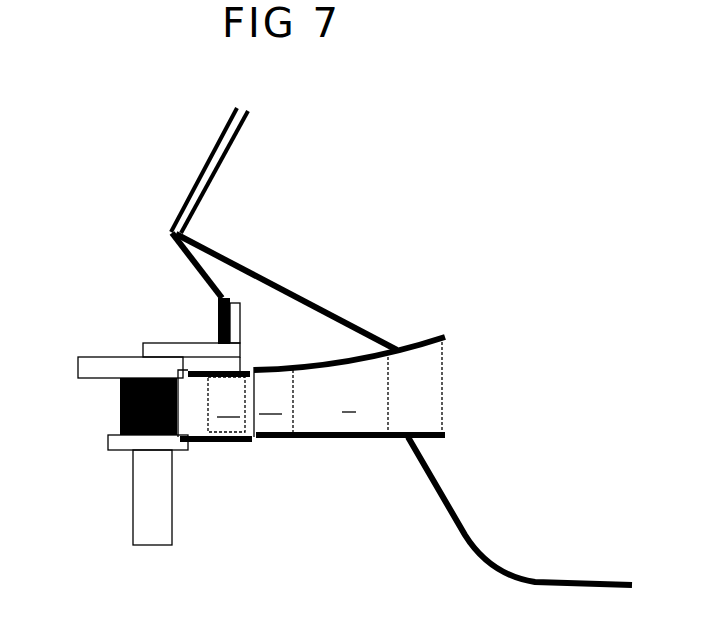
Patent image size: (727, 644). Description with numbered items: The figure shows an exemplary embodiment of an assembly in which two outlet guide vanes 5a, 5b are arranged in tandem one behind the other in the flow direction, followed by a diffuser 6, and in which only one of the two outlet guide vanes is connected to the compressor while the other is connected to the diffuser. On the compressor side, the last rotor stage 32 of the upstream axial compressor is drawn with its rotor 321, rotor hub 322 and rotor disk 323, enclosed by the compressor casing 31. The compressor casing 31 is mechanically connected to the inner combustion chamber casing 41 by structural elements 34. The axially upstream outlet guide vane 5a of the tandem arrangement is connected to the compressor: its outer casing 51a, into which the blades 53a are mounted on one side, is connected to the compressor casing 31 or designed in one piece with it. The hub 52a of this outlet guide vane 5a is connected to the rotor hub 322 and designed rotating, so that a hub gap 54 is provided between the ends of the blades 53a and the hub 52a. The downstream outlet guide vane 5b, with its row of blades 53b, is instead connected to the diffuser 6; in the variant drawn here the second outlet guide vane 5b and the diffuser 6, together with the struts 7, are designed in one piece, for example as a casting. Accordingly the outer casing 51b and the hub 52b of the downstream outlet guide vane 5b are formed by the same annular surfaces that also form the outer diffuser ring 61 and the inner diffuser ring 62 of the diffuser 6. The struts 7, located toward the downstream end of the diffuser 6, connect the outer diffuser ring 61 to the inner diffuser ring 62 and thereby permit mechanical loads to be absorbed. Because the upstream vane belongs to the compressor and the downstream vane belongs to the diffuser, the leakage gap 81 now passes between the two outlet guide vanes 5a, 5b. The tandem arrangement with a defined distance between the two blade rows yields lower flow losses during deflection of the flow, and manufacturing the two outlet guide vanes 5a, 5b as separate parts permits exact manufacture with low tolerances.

The structural elements 34 is at (195, 175).
The inner combustion chamber casing 41 is at (262, 270).
The compressor casing 31 is at (143, 357).
The outer casing 51a is at (220, 345).
The blades 53a is at (208, 388).
The outlet guide vane 5a is at (211, 403).
The hub 52a is at (210, 447).
The hub gap 54 is at (238, 443).
The leakage gap 81 is at (258, 447).
The rotor 321 is at (120, 408).
The last rotor stage 32 is at (100, 452).
The rotor hub 322 is at (122, 442).
The rotor disk 323 is at (155, 525).
The outlet guide vane 5b is at (273, 402).
The outer casing 51b is at (262, 366).
The blades 53b is at (290, 378).
The hub 52b is at (278, 443).
The diffuser 6 is at (365, 395).
The outer diffuser ring 61 is at (352, 355).
The inner diffuser ring 62 is at (344, 440).
The struts 7 is at (432, 390).